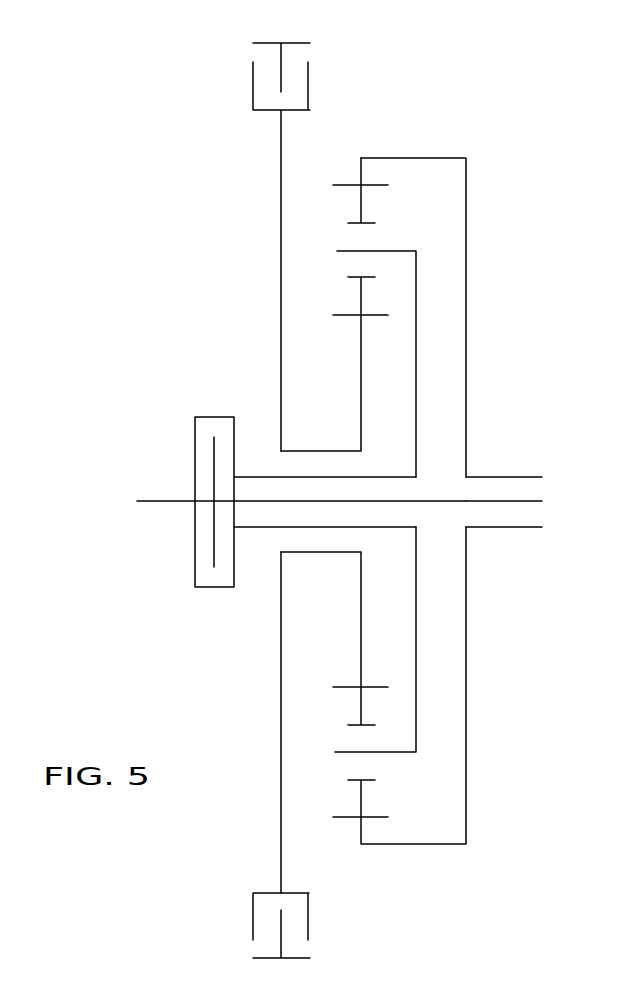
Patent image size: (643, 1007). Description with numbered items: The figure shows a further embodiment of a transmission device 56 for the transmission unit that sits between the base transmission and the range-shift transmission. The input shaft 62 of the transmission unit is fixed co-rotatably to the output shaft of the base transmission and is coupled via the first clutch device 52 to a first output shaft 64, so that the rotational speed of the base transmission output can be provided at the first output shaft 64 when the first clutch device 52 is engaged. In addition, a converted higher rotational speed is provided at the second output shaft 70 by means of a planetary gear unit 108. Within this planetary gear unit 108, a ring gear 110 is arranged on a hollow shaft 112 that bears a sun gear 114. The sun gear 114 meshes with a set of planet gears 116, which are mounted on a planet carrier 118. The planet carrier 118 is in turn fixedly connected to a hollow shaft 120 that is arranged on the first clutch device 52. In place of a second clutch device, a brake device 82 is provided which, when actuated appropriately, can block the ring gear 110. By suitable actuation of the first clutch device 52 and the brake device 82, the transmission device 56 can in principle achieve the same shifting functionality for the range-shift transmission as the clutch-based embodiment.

The transmission device 56 is at (157, 78).
The brake device 82 is at (300, 78).
The ring gear 110 is at (281, 190).
The planetary gear unit 108 is at (447, 112).
The planet gears 116 is at (363, 210).
The planet carrier 118 is at (416, 322).
The sun gear 114 is at (362, 360).
The hollow shaft 112 is at (306, 552).
The hollow shaft 120 is at (259, 477).
The second output shaft 70 is at (523, 477).
The input shaft 62 is at (165, 501).
The first output shaft 64 is at (523, 501).
The first clutch device 52 is at (213, 555).